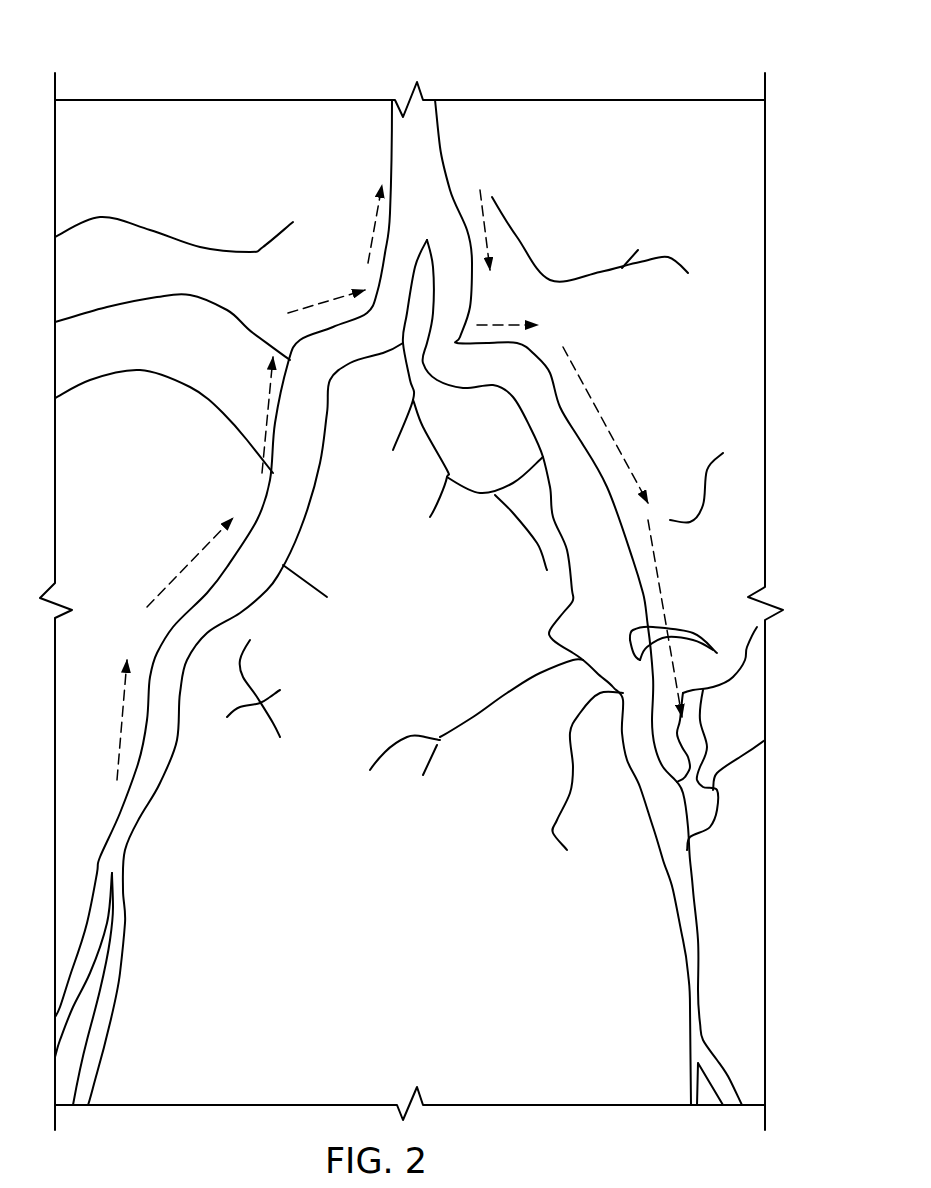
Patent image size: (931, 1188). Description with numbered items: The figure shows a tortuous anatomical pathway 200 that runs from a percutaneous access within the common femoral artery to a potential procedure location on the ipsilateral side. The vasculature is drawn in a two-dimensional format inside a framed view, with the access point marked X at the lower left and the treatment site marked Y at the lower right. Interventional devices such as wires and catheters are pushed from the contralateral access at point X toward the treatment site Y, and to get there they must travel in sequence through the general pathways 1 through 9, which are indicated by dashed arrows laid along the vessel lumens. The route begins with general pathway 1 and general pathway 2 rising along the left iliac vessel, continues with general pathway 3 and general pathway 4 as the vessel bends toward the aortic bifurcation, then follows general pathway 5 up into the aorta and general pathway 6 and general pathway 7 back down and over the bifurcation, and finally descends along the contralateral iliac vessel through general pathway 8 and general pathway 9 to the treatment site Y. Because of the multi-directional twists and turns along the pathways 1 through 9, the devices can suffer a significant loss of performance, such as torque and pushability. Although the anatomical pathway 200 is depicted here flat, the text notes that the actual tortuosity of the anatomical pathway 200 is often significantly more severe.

The tortuous anatomical pathway 200 is at (560, 44).
The general pathway 1 is at (112, 720).
The general pathway 2 is at (190, 562).
The general pathway 3 is at (258, 415).
The general pathway 4 is at (326, 295).
The general pathway 5 is at (367, 224).
The general pathway 6 is at (493, 230).
The general pathway 7 is at (507, 309).
The general pathway 8 is at (605, 425).
The general pathway 9 is at (667, 618).